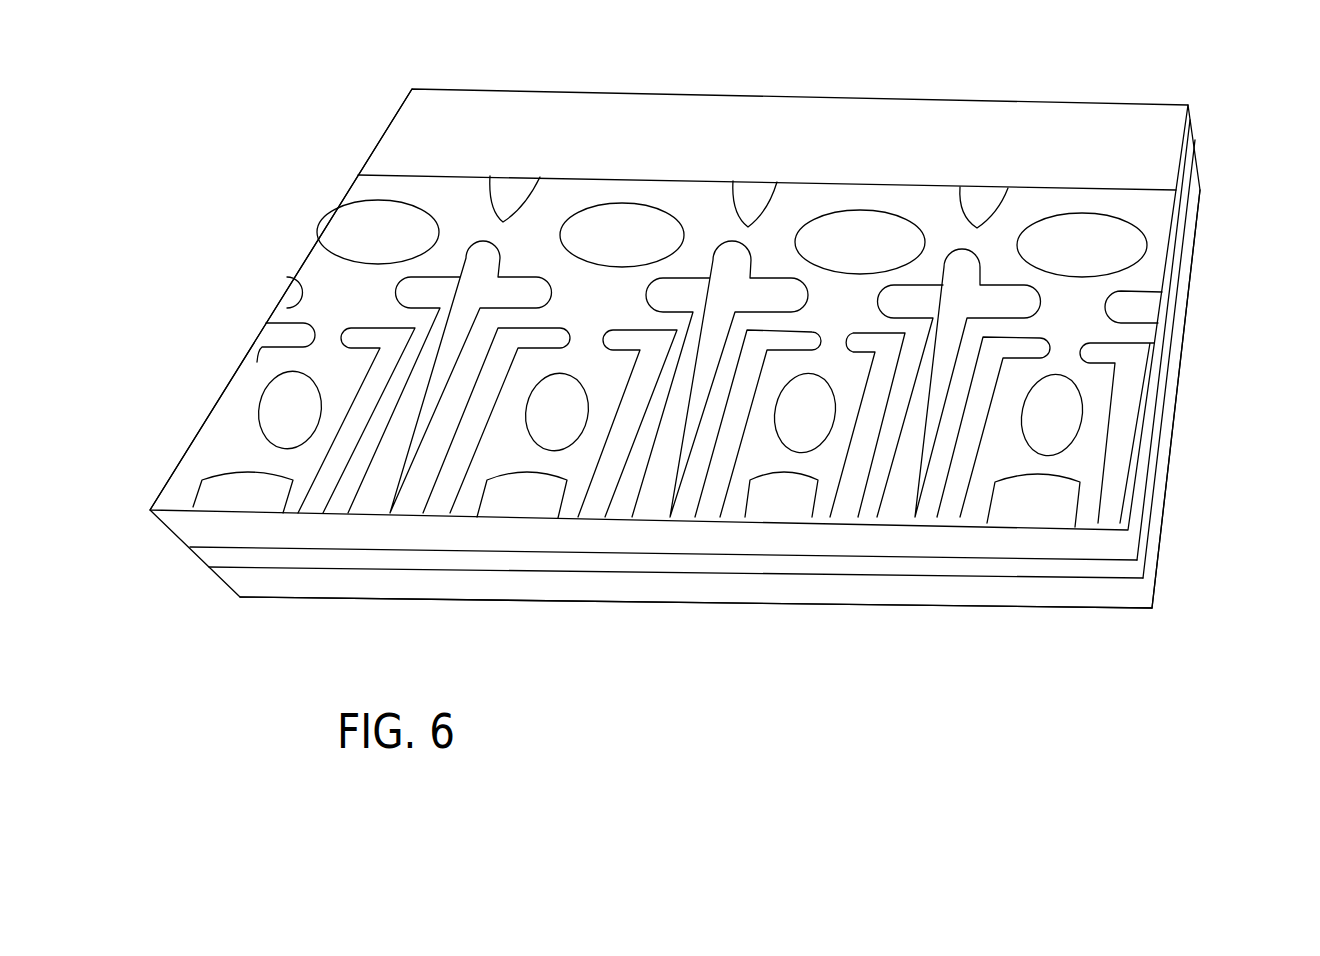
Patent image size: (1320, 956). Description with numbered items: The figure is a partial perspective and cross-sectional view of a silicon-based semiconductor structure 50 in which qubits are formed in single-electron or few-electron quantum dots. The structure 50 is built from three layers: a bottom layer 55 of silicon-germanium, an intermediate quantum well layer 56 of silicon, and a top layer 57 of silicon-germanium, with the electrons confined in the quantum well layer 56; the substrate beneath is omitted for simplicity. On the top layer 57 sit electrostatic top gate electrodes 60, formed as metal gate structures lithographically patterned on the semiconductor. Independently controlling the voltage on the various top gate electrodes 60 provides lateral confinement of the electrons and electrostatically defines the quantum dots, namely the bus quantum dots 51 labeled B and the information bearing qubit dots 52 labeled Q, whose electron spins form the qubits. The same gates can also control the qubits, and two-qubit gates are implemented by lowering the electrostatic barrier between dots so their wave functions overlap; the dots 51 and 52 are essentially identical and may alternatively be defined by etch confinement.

The silicon-based semiconductor structure 50 is at (1212, 223).
The bus quantum dots 51 is at (327, 222).
The information bearing qubit dots 52 is at (268, 407).
The bottom layer 55 is at (240, 600).
The intermediate quantum well layer 56 is at (196, 558).
The top layer 57 is at (163, 528).
The electrostatic top gate electrodes 60 is at (692, 145).